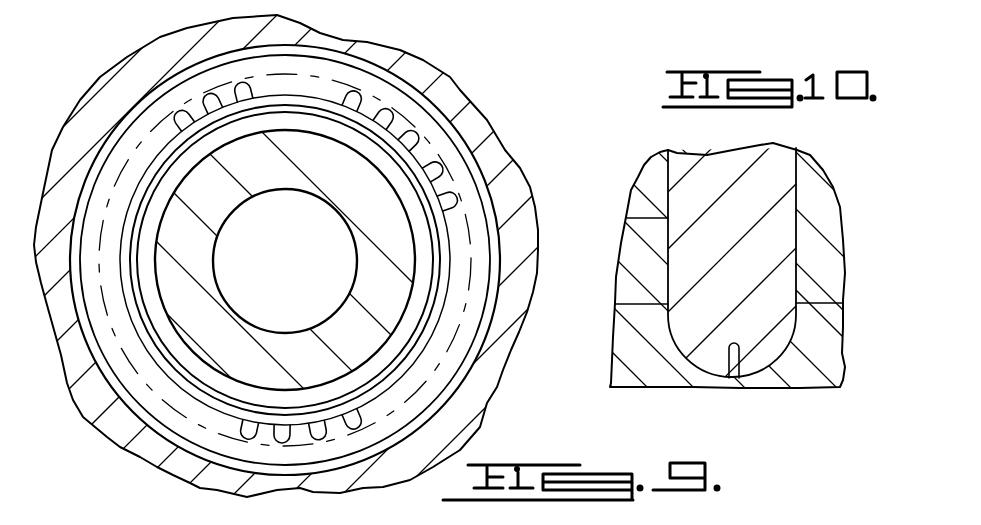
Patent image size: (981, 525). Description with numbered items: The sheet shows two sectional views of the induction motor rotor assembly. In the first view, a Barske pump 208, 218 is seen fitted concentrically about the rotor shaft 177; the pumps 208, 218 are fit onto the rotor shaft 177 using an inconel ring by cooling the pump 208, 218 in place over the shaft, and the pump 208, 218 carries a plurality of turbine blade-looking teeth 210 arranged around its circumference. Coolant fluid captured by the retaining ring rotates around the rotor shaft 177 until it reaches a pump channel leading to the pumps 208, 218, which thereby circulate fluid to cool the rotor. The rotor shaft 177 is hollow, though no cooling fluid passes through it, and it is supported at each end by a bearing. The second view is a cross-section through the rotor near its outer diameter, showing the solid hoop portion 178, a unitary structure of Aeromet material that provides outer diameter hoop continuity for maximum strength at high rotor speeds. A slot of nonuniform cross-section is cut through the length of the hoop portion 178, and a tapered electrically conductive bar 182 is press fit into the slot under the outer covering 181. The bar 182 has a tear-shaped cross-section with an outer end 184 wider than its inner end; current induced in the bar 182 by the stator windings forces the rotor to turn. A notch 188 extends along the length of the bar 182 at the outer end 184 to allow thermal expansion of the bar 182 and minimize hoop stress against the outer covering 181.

In FIG. 9, the rotor shaft 177 is at (368, 161).
In FIG. 10, the hoop portion 178 is at (825, 224).
In FIG. 10, the outer covering 181 is at (633, 343).
In FIG. 10, the electrically conductive bar 182 is at (634, 218).
In FIG. 10, the outer end 184 is at (674, 340).
In FIG. 10, the notch 188 is at (744, 350).
In FIG. 9, the pump 208 is at (481, 221).
In FIG. 9, the turbine blade-looking teeth 210 is at (422, 182).
In FIG. 9, the pump 218 is at (198, 110).